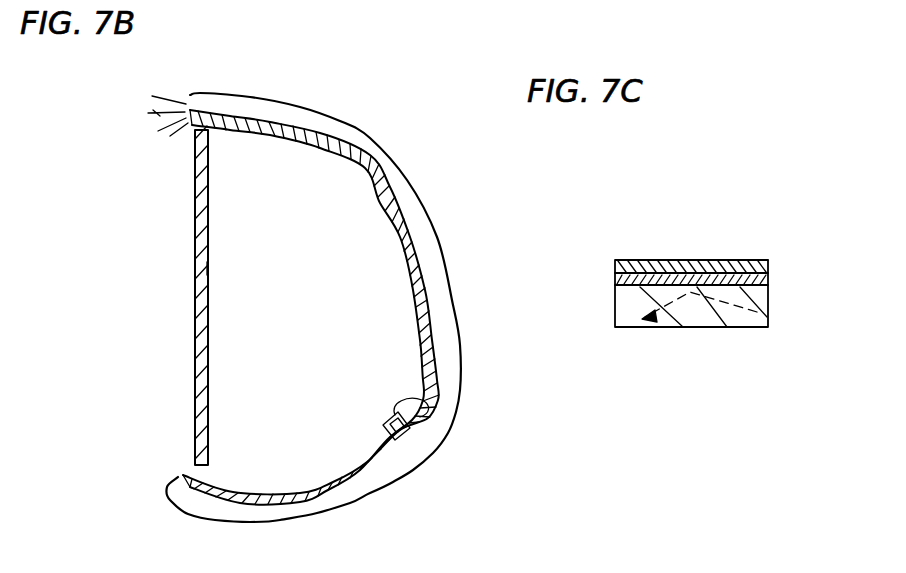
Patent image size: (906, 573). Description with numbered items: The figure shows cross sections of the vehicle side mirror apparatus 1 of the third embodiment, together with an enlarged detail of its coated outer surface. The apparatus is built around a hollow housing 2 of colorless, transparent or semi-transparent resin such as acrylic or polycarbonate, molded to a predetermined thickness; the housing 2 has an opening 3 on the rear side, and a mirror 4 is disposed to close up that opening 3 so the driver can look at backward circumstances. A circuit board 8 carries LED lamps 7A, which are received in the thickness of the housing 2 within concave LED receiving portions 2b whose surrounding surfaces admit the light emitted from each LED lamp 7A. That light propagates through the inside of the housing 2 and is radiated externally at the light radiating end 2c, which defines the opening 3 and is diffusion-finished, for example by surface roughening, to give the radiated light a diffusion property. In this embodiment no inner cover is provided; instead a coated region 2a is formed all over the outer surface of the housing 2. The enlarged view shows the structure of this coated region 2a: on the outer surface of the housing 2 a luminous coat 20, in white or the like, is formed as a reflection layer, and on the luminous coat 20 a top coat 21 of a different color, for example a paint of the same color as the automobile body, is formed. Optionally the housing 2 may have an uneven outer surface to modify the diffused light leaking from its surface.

In FIG. 7B, the vehicle side mirror apparatus 1 is at (368, 140).
In FIG. 7B, the housing 2 is at (407, 227).
In FIG. 7C, the housing 2 is at (697, 316).
In FIG. 7B, the coated region 2a is at (396, 482).
In FIG. 7C, the coated region 2a is at (722, 260).
In FIG. 7B, the LED receiving portion 2b is at (398, 431).
In FIG. 7B, the light radiating end 2c is at (190, 104).
In FIG. 7B, the opening 3 is at (188, 348).
In FIG. 7B, the mirror 4 is at (202, 268).
In FIG. 7B, the circuit board 8 is at (426, 404).
In FIG. 7B, the LED lamp 7A is at (395, 422).
In FIG. 7C, the luminous coat 20 is at (679, 279).
In FIG. 7C, the top coat 21 is at (637, 260).